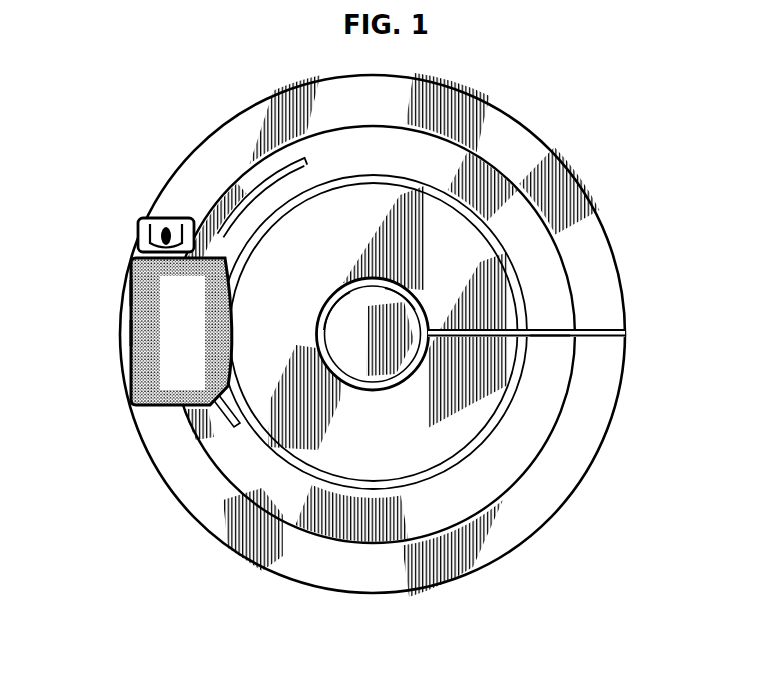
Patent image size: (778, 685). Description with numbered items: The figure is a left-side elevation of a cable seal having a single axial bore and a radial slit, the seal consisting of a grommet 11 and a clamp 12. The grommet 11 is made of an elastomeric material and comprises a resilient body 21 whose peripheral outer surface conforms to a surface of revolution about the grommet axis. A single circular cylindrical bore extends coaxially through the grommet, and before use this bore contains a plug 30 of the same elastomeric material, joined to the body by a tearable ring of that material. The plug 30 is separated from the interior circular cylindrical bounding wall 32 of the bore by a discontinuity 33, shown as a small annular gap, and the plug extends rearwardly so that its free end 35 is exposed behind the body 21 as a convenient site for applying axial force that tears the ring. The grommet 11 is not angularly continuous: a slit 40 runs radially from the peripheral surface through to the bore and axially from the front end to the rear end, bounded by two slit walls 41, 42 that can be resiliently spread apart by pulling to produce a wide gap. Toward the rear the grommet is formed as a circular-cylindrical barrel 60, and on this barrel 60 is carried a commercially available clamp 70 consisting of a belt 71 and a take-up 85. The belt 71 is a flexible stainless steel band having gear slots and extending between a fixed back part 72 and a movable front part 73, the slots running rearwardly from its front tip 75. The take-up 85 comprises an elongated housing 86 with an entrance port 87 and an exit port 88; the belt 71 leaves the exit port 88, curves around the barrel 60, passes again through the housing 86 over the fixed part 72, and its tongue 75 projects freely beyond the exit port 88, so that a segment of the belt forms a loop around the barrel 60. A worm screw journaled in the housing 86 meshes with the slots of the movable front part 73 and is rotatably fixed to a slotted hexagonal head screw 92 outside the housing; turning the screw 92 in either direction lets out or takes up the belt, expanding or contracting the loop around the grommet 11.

The grommet 11 is at (552, 514).
The clamp 12 is at (497, 242).
The resilient body 21 is at (318, 457).
The plug 30 is at (358, 389).
The interior circular cylindrical bounding wall 32 is at (395, 287).
The discontinuity 33 is at (337, 292).
The free end 35 is at (391, 372).
The slit 40 is at (625, 333).
The slit wall 41 is at (549, 328).
The slit wall 42 is at (550, 340).
The barrel 60 is at (465, 433).
The clamp 70 is at (215, 344).
The belt 71 is at (440, 197).
The back part 72 is at (237, 412).
The front part 73 is at (255, 195).
The front tip 75 is at (301, 160).
The take-up 85 is at (130, 294).
The housing 86 is at (130, 332).
The entrance port 87 is at (198, 430).
The exit port 88 is at (213, 215).
The slotted hexagonal head screw 92 is at (138, 231).